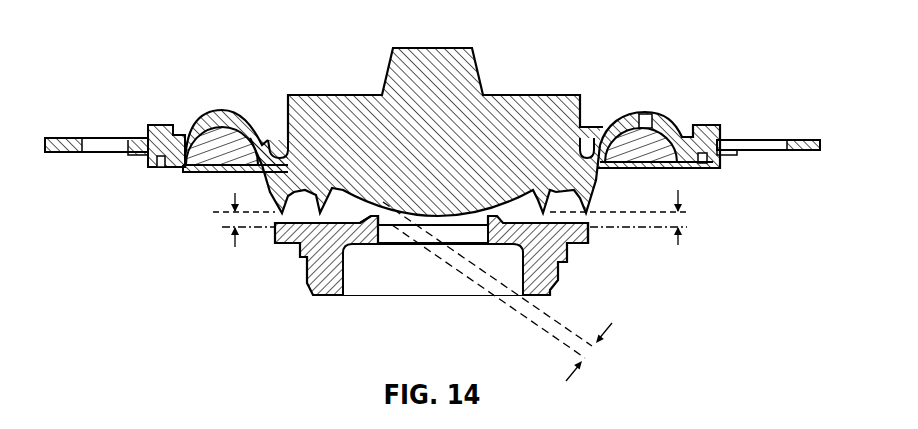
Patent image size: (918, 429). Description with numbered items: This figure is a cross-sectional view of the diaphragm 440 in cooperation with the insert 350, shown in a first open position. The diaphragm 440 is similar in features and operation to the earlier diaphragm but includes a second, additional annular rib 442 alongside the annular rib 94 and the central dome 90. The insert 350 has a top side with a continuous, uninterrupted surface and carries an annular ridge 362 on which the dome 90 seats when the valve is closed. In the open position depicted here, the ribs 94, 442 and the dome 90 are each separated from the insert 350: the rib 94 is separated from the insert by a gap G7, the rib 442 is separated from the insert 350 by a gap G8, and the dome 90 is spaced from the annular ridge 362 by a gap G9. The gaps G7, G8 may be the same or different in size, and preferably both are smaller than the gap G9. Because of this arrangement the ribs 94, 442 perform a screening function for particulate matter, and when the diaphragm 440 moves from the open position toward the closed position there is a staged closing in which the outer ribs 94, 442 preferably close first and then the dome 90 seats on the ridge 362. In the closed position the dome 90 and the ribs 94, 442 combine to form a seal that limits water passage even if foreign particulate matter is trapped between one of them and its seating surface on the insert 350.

The diaphragm 440 is at (527, 96).
The annular rib 94 is at (588, 205).
The insert 350 is at (471, 277).
The ridge 362 is at (380, 218).
The dome 90 is at (448, 217).
The second annular rib 442 is at (590, 237).
The gap G7 is at (227, 222).
The gap G8 is at (683, 218).
The gap G9 is at (590, 355).